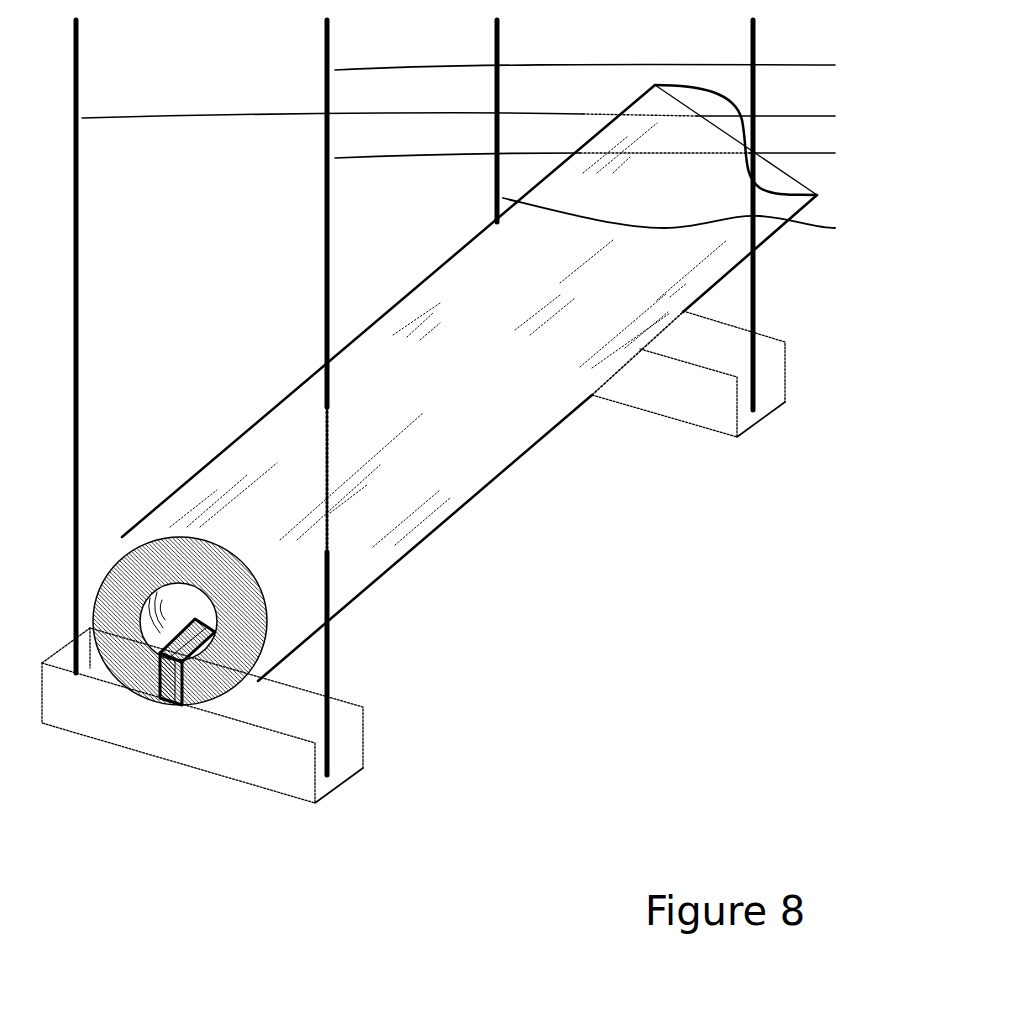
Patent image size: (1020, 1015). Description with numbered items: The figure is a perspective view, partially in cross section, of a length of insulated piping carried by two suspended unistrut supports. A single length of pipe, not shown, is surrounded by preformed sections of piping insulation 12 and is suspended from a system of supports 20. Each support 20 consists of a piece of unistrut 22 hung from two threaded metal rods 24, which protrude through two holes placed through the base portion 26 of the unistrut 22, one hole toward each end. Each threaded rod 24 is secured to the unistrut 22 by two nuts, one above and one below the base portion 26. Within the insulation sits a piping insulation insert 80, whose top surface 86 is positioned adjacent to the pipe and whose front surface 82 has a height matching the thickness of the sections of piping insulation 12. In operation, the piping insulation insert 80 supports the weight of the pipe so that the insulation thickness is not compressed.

The piping insulation 12 is at (233, 610).
The support 20 is at (763, 40).
The unistrut 22 is at (787, 370).
The threaded metal rod 24 is at (763, 284).
The base portion 26 is at (765, 417).
The piping insulation insert 80 is at (190, 704).
The front surface 82 is at (173, 706).
The top surface 86 is at (203, 632).